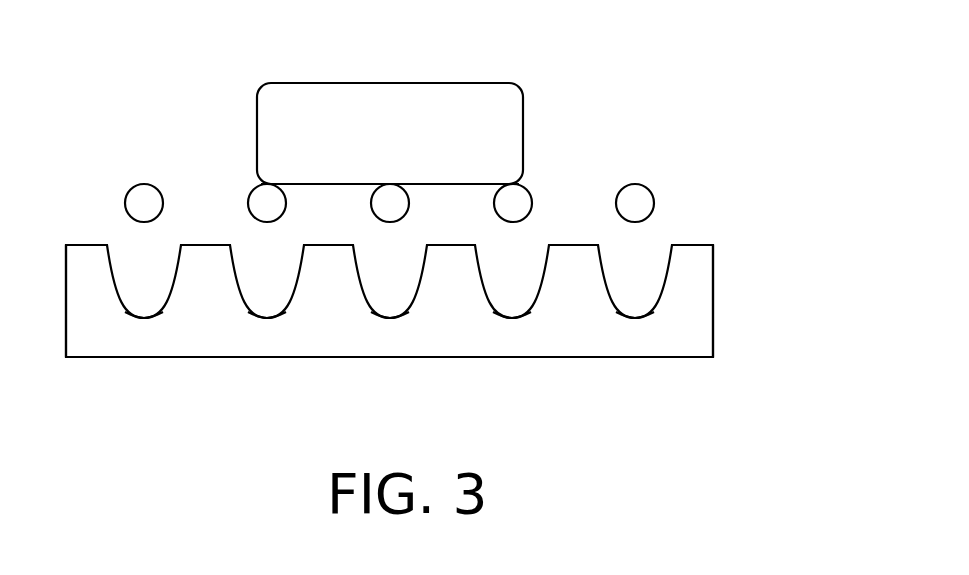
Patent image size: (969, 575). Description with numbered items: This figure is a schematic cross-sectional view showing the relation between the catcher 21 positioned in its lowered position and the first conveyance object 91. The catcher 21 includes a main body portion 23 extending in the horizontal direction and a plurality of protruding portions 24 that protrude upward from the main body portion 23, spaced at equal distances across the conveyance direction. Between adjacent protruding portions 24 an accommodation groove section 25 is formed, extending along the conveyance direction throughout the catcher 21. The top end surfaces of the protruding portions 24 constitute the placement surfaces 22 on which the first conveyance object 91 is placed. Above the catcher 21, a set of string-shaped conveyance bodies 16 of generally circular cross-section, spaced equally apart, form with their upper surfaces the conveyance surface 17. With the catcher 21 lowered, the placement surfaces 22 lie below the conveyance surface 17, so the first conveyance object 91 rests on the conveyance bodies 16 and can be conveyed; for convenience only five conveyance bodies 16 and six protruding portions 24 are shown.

The first conveyance object 91 is at (391, 95).
The conveyance surface 17 is at (263, 183).
The conveyance body 16 is at (258, 192).
The placement surface 22 is at (85, 245).
The catcher 21 is at (714, 264).
The accommodation groove section 25 is at (124, 289).
The protruding portion 24 is at (90, 267).
The main body portion 23 is at (147, 343).